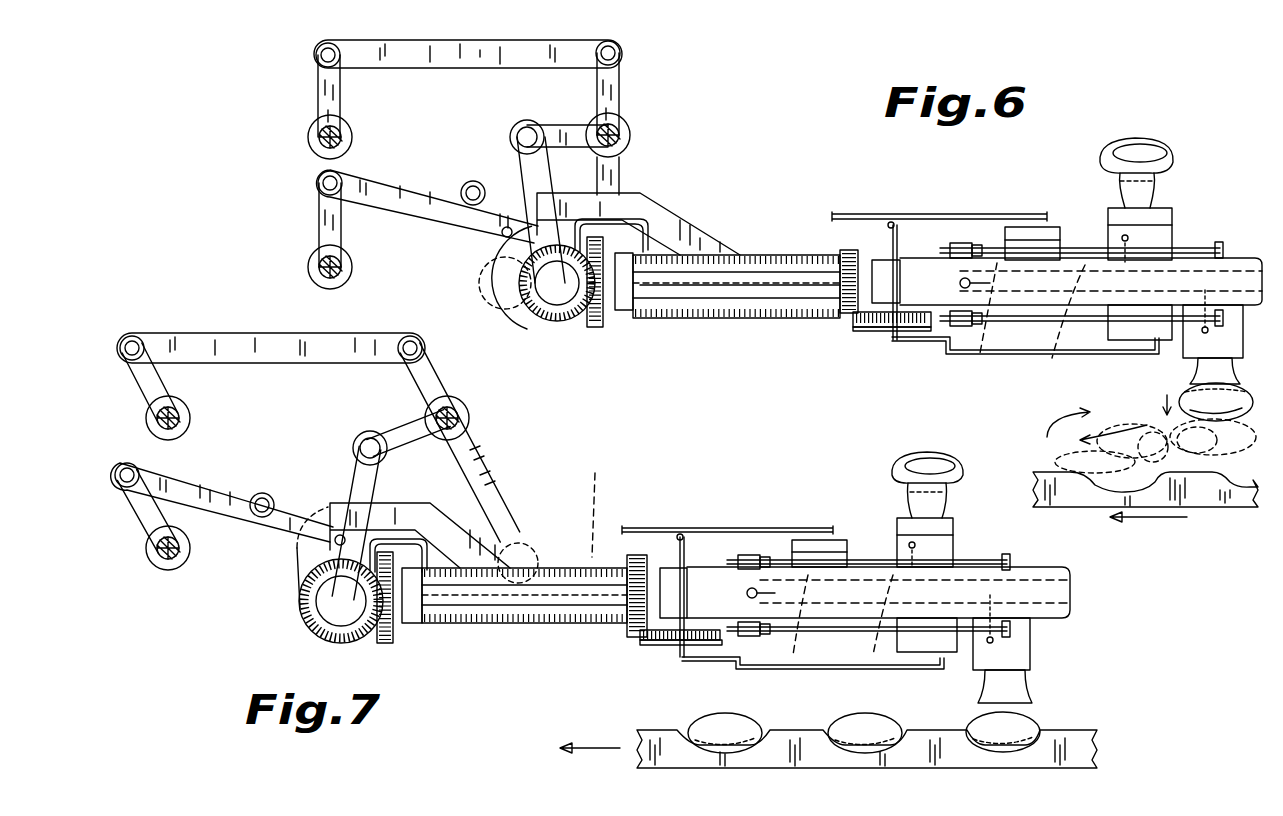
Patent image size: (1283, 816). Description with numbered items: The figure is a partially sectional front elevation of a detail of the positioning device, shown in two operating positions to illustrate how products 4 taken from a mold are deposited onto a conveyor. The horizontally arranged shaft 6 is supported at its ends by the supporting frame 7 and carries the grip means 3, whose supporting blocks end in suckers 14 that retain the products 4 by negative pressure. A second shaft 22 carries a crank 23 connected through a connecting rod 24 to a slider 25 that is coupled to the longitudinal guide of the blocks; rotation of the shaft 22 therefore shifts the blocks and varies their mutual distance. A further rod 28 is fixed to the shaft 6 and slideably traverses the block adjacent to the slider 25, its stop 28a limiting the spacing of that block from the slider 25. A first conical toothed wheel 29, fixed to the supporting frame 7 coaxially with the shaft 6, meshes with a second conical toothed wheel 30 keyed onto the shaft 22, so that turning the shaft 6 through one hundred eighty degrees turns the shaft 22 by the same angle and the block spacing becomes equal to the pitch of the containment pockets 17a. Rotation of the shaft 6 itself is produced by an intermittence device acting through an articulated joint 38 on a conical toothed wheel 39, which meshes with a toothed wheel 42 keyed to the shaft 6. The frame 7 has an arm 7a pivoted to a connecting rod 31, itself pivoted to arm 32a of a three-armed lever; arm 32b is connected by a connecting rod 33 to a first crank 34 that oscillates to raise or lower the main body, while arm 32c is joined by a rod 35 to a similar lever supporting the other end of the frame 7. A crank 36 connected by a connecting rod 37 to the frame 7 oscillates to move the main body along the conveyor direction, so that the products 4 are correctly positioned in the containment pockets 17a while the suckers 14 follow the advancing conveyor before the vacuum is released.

In FIG. 6, the grip means 3 is at (1198, 172).
In FIG. 7, the grip means 3 is at (972, 506).
In FIG. 6, the products 4 is at (1123, 150).
In FIG. 7, the products 4 is at (930, 460).
In FIG. 6, the first horizontally arranged shaft 6 is at (712, 288).
In FIG. 7, the first horizontally arranged shaft 6 is at (520, 600).
In FIG. 6, the supporting frame 7 is at (785, 250).
In FIG. 7, the supporting frame 7 is at (580, 626).
In FIG. 6, the arm 7a is at (680, 228).
In FIG. 7, the arm 7a is at (500, 528).
In FIG. 6, the sucker 14 is at (1145, 205).
In FIG. 7, the sucker 14 is at (910, 505).
In FIG. 6, the containment pockets 17a is at (1097, 480).
In FIG. 7, the containment pockets 17a is at (740, 748).
In FIG. 6, the second shaft 22 is at (900, 235).
In FIG. 7, the second shaft 22 is at (690, 548).
In FIG. 6, the crank 23 is at (865, 212).
In FIG. 7, the crank 23 is at (645, 526).
In FIG. 6, the connecting rod 24 is at (915, 214).
In FIG. 7, the connecting rod 24 is at (690, 528).
In FIG. 6, the slider 25 is at (1030, 226).
In FIG. 7, the slider 25 is at (808, 540).
In FIG. 6, the further rod 28 is at (1072, 262).
In FIG. 7, the further rod 28 is at (860, 558).
In FIG. 6, the stop 28a is at (1218, 243).
In FIG. 7, the stop 28a is at (1010, 560).
In FIG. 6, the first conical toothed wheel 29 is at (845, 318).
In FIG. 7, the first conical toothed wheel 29 is at (635, 625).
In FIG. 6, the second conical toothed wheel 30 is at (880, 331).
In FIG. 7, the second conical toothed wheel 30 is at (660, 645).
In FIG. 6, the connecting rod 31 is at (515, 178).
In FIG. 7, the connecting rod 31 is at (350, 490).
In FIG. 6, the arm of lever 32a is at (560, 118).
In FIG. 7, the arm of lever 32a is at (395, 432).
In FIG. 6, the arm of lever 32b is at (622, 88).
In FIG. 7, the arm of lever 32b is at (440, 380).
In FIG. 6, the arm of lever 32c is at (622, 170).
In FIG. 7, the arm of lever 32c is at (490, 472).
In FIG. 6, the connecting rod 33 is at (450, 66).
In FIG. 7, the connecting rod 33 is at (244, 352).
In FIG. 6, the first crank 34 is at (318, 88).
In FIG. 7, the first crank 34 is at (140, 385).
In FIG. 7, the rod 35 is at (563, 522).
In FIG. 6, the crank 36 is at (343, 234).
In FIG. 7, the crank 36 is at (135, 525).
In FIG. 6, the connecting rod 37 is at (385, 185).
In FIG. 7, the connecting rod 37 is at (210, 478).
In FIG. 6, the articulated joint 38 is at (455, 292).
In FIG. 7, the articulated joint 38 is at (284, 565).
In FIG. 6, the conical toothed wheel 39 is at (572, 320).
In FIG. 7, the conical toothed wheel 39 is at (300, 607).
In FIG. 6, the toothed wheel 42 is at (605, 320).
In FIG. 7, the toothed wheel 42 is at (395, 638).